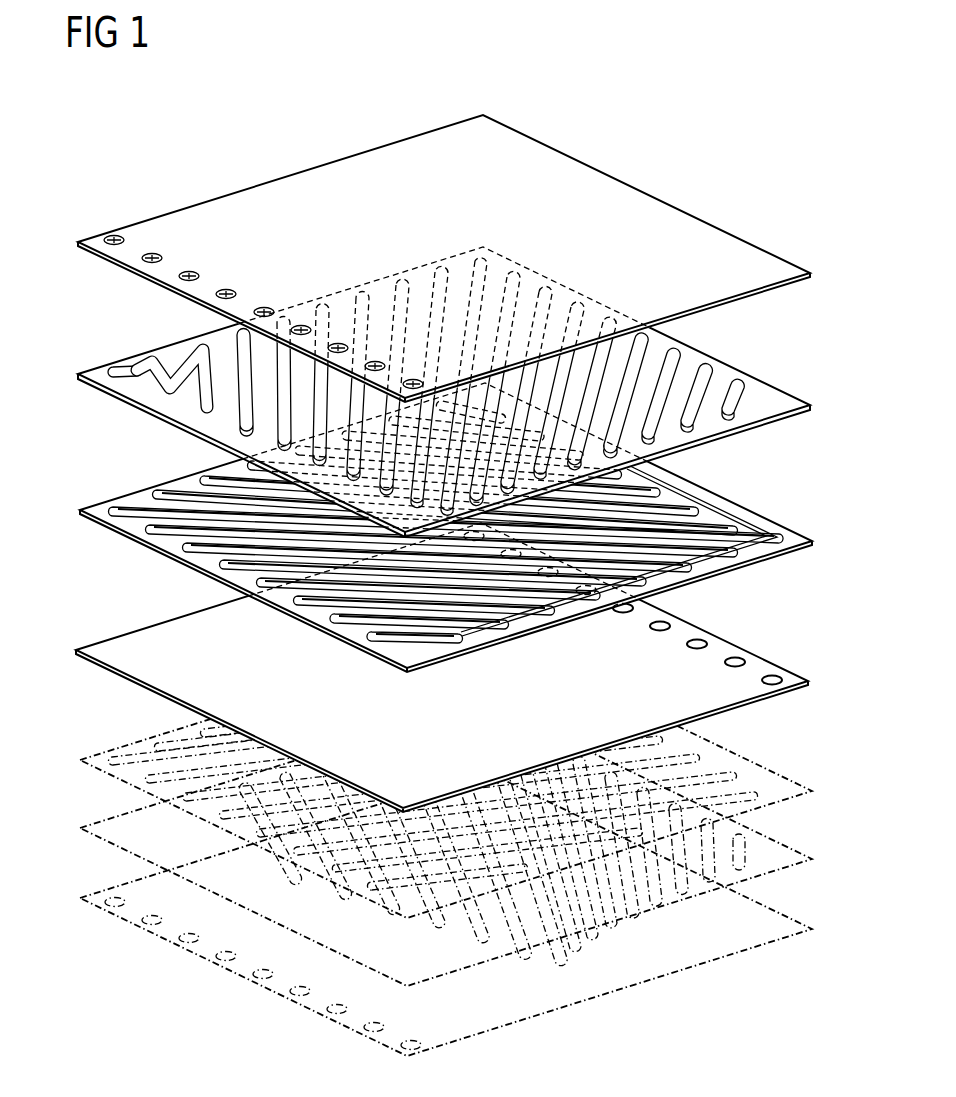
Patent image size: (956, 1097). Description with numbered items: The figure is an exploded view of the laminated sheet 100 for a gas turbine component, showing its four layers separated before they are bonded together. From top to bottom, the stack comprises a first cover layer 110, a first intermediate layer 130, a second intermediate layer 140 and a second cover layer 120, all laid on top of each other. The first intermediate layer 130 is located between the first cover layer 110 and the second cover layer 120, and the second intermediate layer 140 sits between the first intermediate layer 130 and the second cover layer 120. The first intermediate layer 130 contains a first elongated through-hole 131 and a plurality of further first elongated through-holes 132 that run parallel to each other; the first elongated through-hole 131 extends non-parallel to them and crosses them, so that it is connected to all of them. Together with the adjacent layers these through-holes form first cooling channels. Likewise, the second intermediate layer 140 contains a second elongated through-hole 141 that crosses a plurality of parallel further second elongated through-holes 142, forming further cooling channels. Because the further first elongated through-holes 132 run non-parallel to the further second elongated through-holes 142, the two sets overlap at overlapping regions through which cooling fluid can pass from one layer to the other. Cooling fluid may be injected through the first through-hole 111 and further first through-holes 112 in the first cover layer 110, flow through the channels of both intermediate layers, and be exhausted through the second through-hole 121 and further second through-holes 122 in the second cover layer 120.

The laminated sheet 100 is at (338, 126).
The first cover layer 110 is at (690, 222).
The first through-hole 111 is at (112, 236).
The further first through-holes 112 is at (152, 250).
The second cover layer 120 is at (705, 694).
The second through-hole 121 is at (772, 672).
The further second through-holes 122 is at (733, 655).
The first intermediate layer 130 is at (772, 392).
The first elongated through-hole 131 is at (126, 367).
The further first elongated through-holes 132 is at (195, 370).
The second intermediate layer 140 is at (790, 534).
The second elongated through-hole 141 is at (748, 530).
The further second elongated through-holes 142 is at (757, 560).